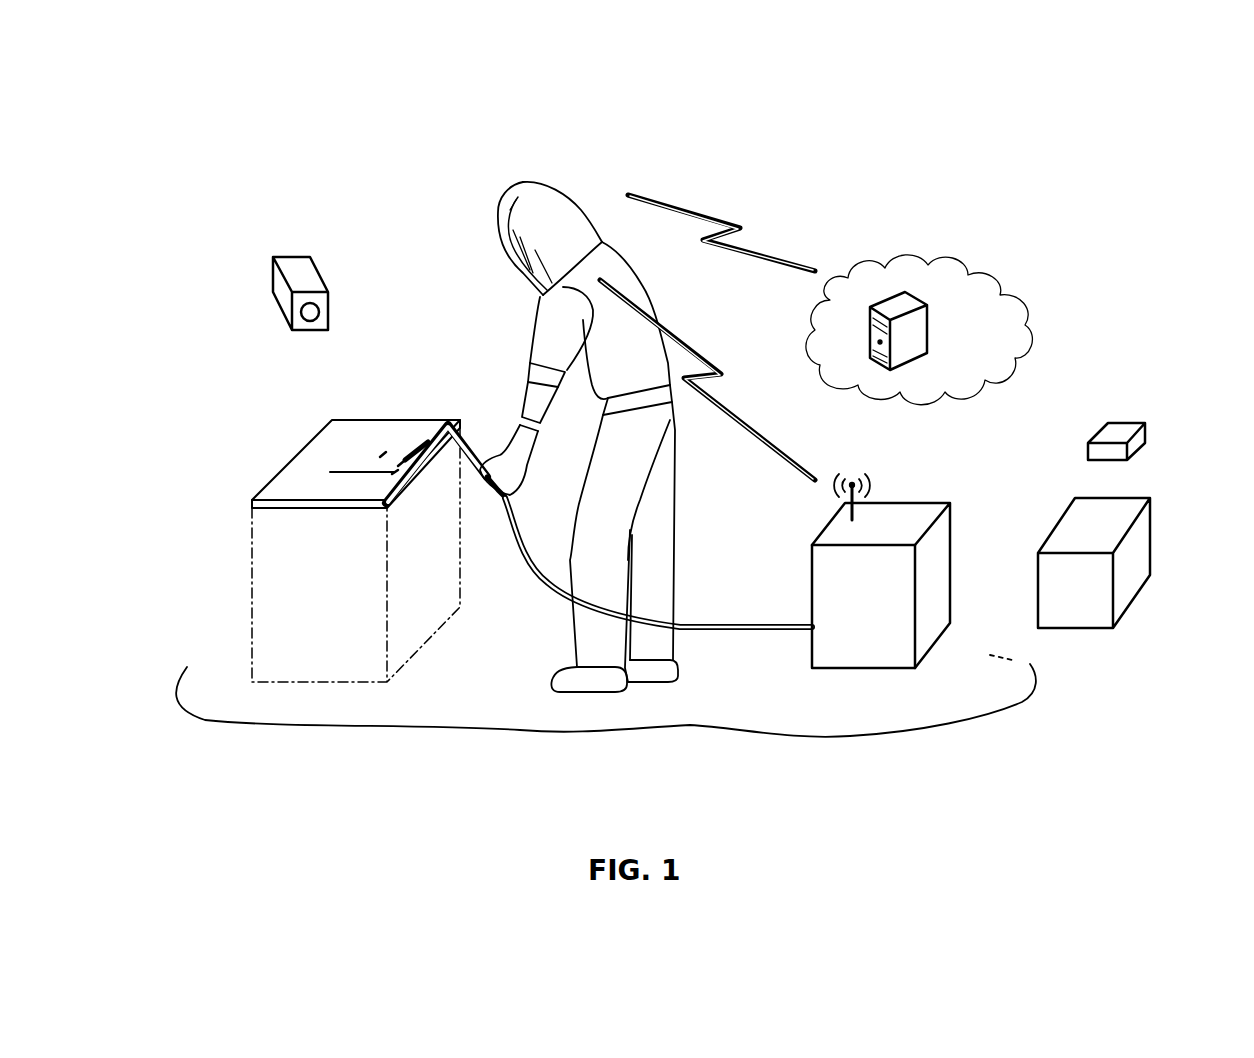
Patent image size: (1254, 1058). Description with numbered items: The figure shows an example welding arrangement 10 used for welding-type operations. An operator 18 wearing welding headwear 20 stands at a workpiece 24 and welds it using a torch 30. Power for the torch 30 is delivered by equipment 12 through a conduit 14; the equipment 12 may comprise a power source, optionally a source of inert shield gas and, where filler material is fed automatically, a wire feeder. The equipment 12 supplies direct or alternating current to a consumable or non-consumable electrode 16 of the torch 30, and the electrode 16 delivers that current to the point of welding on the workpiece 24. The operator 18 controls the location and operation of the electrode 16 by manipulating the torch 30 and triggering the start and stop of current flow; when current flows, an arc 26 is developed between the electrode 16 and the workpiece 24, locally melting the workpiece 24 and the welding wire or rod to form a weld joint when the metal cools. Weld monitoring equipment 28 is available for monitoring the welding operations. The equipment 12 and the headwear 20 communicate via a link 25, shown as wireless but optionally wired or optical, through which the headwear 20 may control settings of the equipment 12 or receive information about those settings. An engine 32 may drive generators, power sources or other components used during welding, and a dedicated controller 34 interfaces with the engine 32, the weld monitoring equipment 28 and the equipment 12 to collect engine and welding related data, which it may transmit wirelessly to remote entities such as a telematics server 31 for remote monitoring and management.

The welding arrangement 10 is at (832, 201).
The equipment 12 is at (890, 510).
The conduit 14 is at (710, 614).
The electrode 16 is at (422, 456).
The operator 18 is at (648, 292).
The welding headwear 20 is at (563, 190).
The workpiece 24 is at (318, 437).
The link 25 is at (713, 367).
The arc 26 is at (393, 465).
The weld monitoring equipment 28 is at (296, 256).
The torch 30 is at (480, 432).
The server 31 is at (922, 312).
The engine 32 is at (1085, 629).
The controller 34 is at (1125, 422).